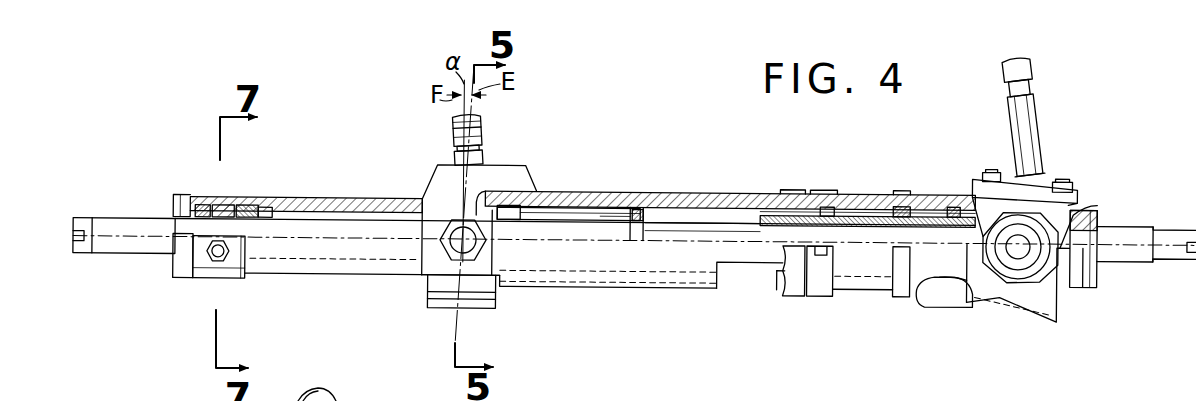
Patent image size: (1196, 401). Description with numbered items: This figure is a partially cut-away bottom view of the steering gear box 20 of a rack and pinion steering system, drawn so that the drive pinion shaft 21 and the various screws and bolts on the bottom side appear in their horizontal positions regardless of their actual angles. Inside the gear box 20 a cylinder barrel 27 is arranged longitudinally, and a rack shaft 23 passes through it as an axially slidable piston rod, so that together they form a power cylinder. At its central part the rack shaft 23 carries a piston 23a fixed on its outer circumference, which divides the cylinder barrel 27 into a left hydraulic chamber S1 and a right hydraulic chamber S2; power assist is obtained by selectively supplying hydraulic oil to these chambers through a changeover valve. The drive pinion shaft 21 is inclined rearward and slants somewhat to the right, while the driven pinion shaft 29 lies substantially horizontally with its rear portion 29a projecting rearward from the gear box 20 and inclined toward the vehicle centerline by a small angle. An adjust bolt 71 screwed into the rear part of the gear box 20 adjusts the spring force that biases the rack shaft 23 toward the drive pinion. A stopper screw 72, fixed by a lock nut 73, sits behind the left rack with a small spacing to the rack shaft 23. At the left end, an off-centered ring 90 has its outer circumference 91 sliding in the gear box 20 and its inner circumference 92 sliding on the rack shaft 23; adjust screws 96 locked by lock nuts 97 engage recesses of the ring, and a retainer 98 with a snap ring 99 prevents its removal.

The steering gear box 20 is at (662, 293).
The drive pinion shaft 21 is at (1052, 103).
The rack shaft 23 is at (146, 247).
The piston 23a is at (662, 212).
The cylinder barrel 27 is at (568, 192).
The driven pinion shaft 29 is at (461, 137).
The rear portion of driven pinion shaft 29a is at (484, 124).
The adjust bolt 71 is at (1018, 247).
The stopper screw 72 is at (474, 241).
The lock nut 73 is at (450, 256).
The off-centered ring 90 is at (226, 206).
The outer circumference of off-centered ring 91 is at (212, 207).
The inner circumference of off-centered ring 92 is at (228, 216).
The adjust screws 96 is at (221, 258).
The lock nuts 97 is at (231, 260).
The retainer 98 is at (190, 205).
The snap ring 99 is at (177, 198).
The left hydraulic chamber S1 is at (614, 217).
The right hydraulic chamber S2 is at (710, 222).